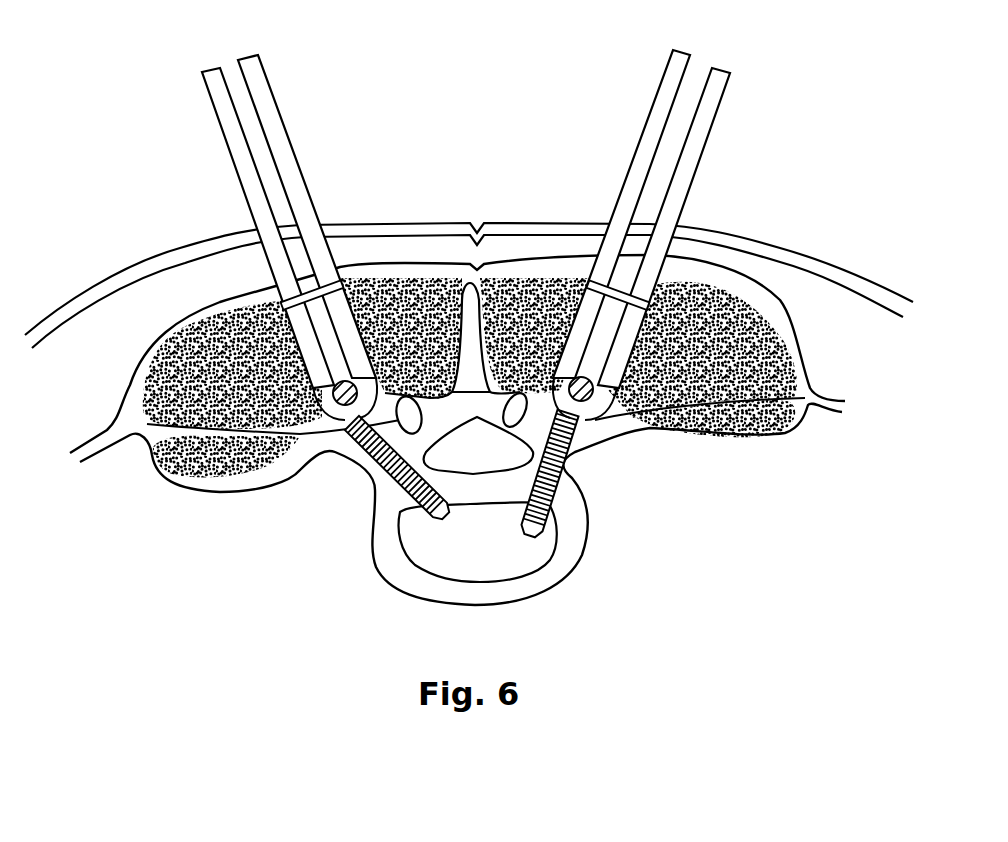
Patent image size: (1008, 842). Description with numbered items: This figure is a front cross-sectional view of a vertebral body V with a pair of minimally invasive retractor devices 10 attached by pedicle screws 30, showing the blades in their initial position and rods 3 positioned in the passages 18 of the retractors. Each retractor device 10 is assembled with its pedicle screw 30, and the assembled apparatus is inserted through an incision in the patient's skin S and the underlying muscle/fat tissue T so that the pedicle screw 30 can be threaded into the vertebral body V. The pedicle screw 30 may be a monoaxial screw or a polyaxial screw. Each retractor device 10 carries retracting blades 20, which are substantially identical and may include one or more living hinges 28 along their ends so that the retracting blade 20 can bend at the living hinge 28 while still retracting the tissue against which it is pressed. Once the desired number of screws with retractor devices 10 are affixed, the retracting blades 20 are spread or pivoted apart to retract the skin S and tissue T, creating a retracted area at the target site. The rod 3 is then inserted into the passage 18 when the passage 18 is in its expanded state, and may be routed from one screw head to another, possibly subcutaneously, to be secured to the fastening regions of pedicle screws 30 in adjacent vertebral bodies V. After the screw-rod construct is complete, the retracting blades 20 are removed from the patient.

The retractor device 10 is at (475, 219).
The passage 18 is at (280, 195).
The retracting blade 20 is at (278, 105).
The living hinge 28 is at (594, 260).
The rod 3 is at (335, 408).
The pedicle screw 30 is at (390, 497).
The skin S is at (836, 252).
The muscle/fat tissue T is at (765, 352).
The vertebral body V is at (562, 552).